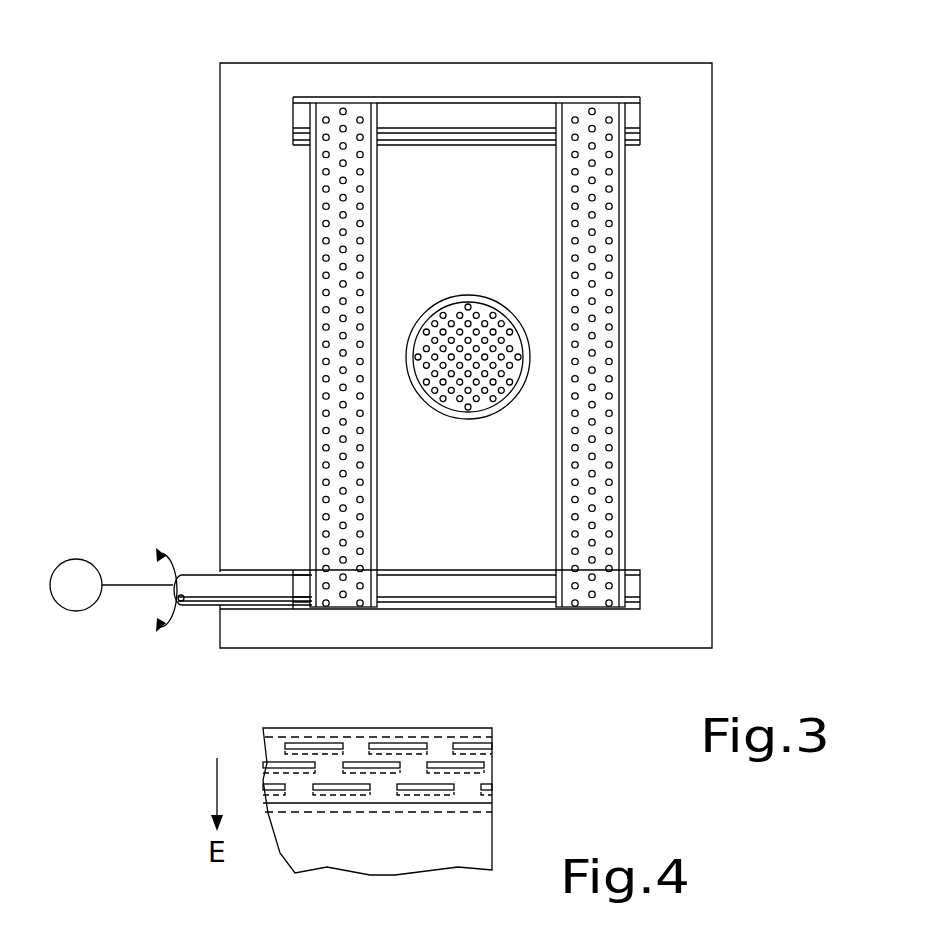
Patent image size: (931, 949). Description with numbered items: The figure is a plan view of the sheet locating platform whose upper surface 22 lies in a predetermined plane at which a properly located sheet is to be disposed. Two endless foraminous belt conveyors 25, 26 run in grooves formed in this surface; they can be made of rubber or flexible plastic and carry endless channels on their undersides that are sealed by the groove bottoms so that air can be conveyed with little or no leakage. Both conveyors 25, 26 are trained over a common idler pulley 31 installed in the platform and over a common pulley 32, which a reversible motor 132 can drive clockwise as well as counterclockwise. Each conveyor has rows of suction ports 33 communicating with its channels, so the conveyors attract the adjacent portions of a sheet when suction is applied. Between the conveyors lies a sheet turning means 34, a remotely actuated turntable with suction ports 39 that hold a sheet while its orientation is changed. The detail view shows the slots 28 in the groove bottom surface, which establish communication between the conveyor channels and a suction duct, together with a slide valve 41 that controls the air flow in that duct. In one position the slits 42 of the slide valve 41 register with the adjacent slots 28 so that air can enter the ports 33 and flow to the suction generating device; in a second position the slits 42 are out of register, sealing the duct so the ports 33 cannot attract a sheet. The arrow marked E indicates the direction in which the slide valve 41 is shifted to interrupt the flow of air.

In FIG. 3, the upper surface 22 is at (512, 475).
In FIG. 3, the endless foraminous belt conveyor 25 is at (322, 235).
In FIG. 3, the endless foraminous belt conveyor 26 is at (607, 197).
In FIG. 4, the slots 28 is at (398, 745).
In FIG. 3, the common idler pulley 31 is at (506, 122).
In FIG. 3, the common pulley 32 is at (451, 592).
In FIG. 3, the suction ports 33 is at (325, 278).
In FIG. 3, the sheet turning means 34 is at (445, 295).
In FIG. 3, the suction ports 39 is at (478, 302).
In FIG. 4, the slide valve 41 is at (492, 812).
In FIG. 4, the slits 42 is at (352, 798).
In FIG. 3, the reversible motor 132 is at (72, 612).